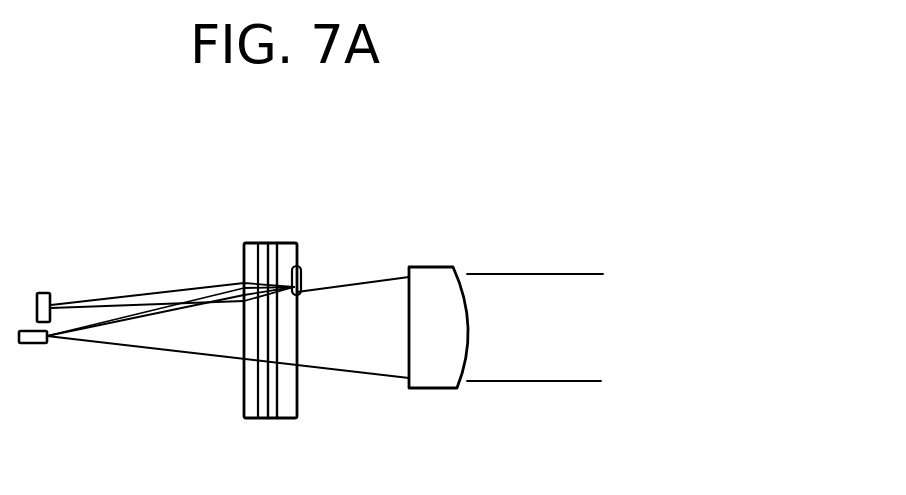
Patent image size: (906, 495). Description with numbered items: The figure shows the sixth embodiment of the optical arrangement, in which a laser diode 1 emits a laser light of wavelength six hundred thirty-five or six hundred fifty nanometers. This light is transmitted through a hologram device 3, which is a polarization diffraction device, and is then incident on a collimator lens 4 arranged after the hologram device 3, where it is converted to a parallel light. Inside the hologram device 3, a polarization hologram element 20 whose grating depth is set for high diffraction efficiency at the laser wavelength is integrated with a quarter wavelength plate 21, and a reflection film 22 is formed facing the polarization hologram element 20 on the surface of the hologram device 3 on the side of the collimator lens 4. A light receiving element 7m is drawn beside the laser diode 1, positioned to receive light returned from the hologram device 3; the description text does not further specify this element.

The laser diode 1 is at (32, 343).
The monitor light receiving element 7m is at (53, 296).
The hologram device 3 is at (290, 282).
The polarization hologram element 20 is at (259, 262).
The quarter wavelength plate 21 is at (298, 255).
The reflection film 22 is at (303, 278).
The collimator lens 4 is at (437, 266).